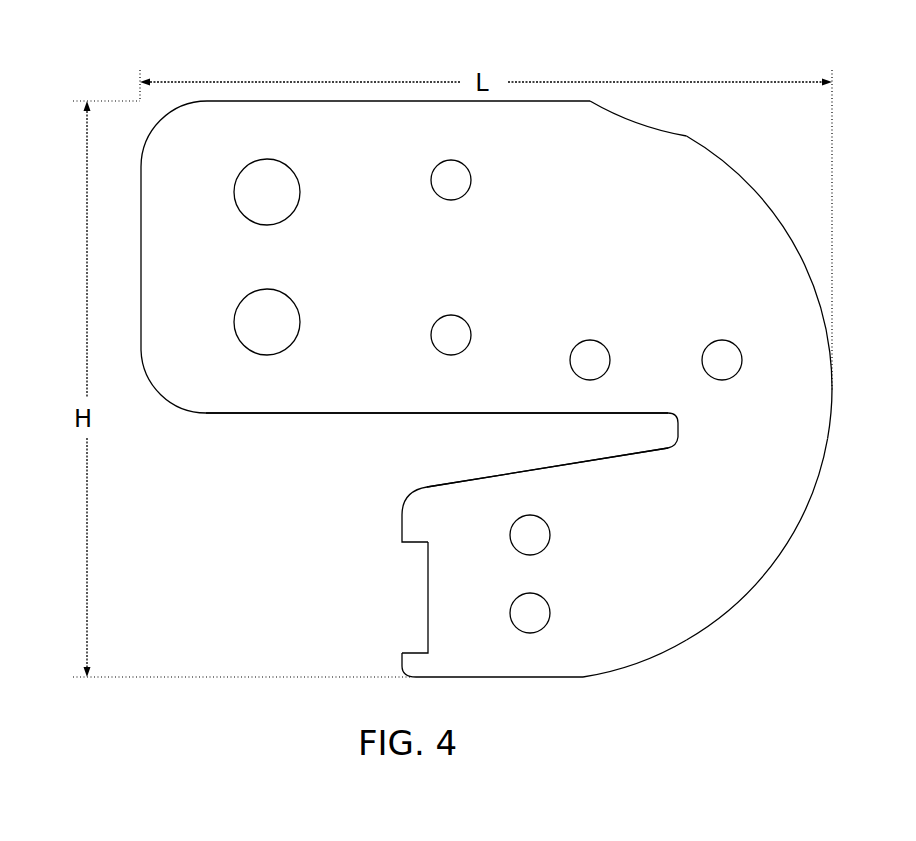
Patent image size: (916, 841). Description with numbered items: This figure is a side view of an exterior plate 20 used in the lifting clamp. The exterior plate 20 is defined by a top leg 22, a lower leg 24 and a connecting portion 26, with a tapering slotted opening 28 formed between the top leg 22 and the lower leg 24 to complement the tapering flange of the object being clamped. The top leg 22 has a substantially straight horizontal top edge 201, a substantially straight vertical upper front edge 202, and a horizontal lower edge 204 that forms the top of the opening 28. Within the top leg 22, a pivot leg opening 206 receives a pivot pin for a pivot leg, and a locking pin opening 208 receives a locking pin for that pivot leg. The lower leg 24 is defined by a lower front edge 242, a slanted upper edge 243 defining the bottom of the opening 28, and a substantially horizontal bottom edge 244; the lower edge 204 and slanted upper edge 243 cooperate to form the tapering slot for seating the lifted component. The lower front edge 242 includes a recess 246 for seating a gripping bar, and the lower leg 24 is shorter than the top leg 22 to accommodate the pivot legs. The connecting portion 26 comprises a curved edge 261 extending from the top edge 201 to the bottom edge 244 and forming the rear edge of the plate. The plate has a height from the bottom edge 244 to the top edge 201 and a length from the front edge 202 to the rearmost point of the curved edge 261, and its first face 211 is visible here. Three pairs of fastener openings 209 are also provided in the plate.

The exterior plate 20 is at (596, 74).
The top leg 22 is at (355, 173).
The lower leg 24 is at (608, 618).
The connecting portion 26 is at (798, 368).
The tapering slotted opening 28 is at (447, 463).
The top edge 201 is at (265, 101).
The upper front edge 202 is at (140, 243).
The lower edge 204 is at (311, 413).
The pivot leg opening 206 is at (279, 205).
The locking pin opening 208 is at (280, 313).
The fastener openings 209 is at (708, 343).
The first face 211 is at (353, 383).
The lower front edge 242 is at (421, 529).
The slanted upper edge 243 is at (512, 472).
The bottom edge 244 is at (530, 677).
The recess 246 is at (413, 597).
The curved edge 261 is at (806, 510).